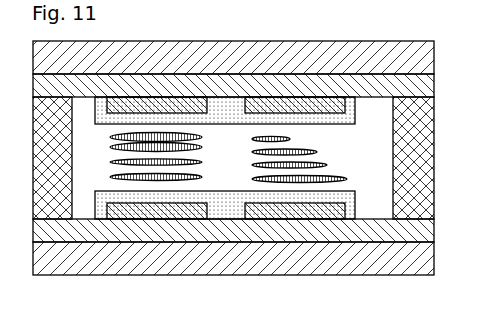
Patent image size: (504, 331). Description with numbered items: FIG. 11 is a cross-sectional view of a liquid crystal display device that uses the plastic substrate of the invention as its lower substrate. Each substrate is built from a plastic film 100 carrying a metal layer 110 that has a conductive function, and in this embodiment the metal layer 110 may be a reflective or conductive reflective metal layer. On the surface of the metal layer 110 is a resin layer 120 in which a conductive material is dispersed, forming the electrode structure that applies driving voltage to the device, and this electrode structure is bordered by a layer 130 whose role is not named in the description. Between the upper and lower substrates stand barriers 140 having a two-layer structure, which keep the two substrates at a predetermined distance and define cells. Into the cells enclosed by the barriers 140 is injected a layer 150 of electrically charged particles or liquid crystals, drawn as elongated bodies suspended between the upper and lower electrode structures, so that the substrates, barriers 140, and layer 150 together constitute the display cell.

The plastic film 100 is at (233, 158).
The metal layer 110 is at (233, 158).
The resin layer 120 is at (272, 192).
The dielectric layer 130 is at (349, 194).
The barriers 140 is at (233, 158).
The layer of electrically charged particles or liquid crystals 150 is at (158, 181).